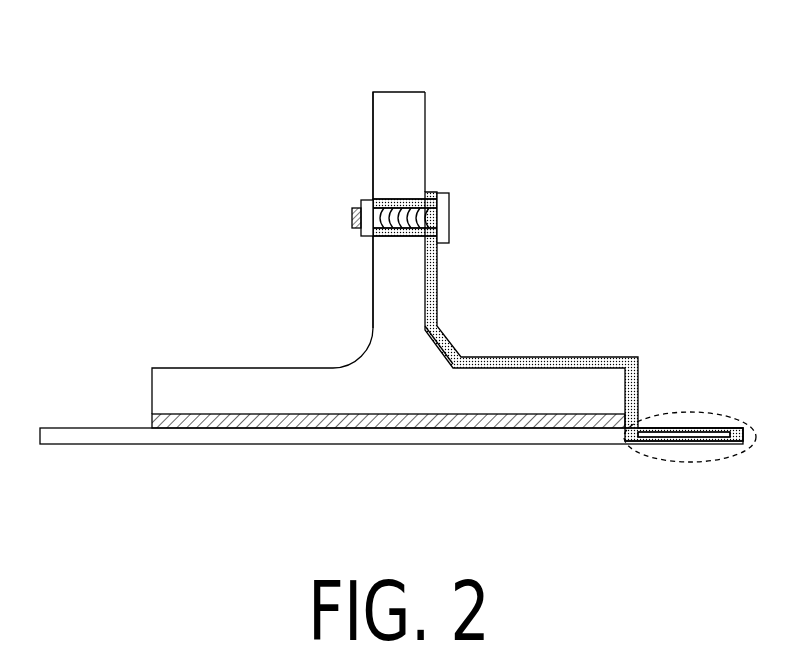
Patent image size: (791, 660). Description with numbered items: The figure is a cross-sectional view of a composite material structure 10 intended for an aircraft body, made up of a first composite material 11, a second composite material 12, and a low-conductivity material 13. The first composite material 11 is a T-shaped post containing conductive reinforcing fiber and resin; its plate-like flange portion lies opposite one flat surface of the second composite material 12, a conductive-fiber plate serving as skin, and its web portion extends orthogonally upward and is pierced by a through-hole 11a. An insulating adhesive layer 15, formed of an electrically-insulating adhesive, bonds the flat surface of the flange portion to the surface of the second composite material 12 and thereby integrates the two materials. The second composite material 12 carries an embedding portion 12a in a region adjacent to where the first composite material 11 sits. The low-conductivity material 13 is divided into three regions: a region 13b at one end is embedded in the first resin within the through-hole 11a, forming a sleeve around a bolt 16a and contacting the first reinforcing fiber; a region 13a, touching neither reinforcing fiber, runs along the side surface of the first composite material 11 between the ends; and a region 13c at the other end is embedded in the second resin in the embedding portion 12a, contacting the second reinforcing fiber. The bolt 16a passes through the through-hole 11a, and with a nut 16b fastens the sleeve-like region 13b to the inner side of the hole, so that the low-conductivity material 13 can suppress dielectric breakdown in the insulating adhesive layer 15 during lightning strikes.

The composite material structure 10 is at (447, 66).
The first composite material 11 is at (407, 115).
The through-hole 11a is at (371, 199).
The second composite material 12 is at (86, 428).
The embedding portion 12a is at (698, 428).
The low-conductivity material 13 is at (541, 348).
The region of low-conductivity material 13a is at (450, 350).
The region of low-conductivity material 13b is at (401, 200).
The region of low-conductivity material 13c is at (690, 462).
The insulating adhesive layer 15 is at (297, 444).
The bolt 16a is at (449, 218).
The nut 16b is at (368, 236).